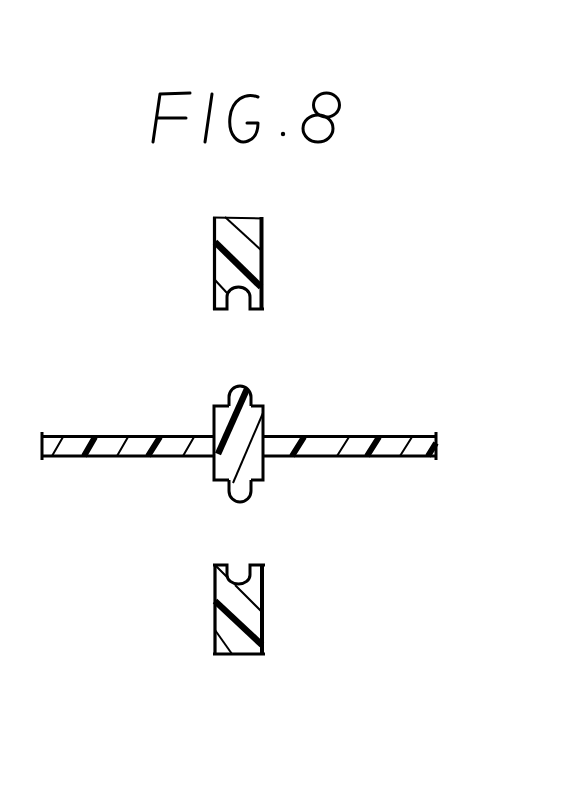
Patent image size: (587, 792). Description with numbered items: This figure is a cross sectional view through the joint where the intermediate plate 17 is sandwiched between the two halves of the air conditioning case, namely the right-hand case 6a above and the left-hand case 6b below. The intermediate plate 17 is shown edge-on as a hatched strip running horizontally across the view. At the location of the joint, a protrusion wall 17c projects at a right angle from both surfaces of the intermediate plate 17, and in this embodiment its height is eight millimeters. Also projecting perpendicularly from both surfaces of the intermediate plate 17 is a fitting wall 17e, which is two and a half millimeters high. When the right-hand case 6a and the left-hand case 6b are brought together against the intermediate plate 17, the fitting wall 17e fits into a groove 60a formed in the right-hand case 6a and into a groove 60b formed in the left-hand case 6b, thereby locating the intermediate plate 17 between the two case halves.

The right-hand case 6a is at (248, 249).
The groove 60a is at (262, 288).
The intermediate plate 17 is at (351, 447).
The protrusion wall 17c is at (255, 414).
The fitting wall 17e is at (228, 396).
The left-hand case 6b is at (252, 616).
The groove 60b is at (257, 578).